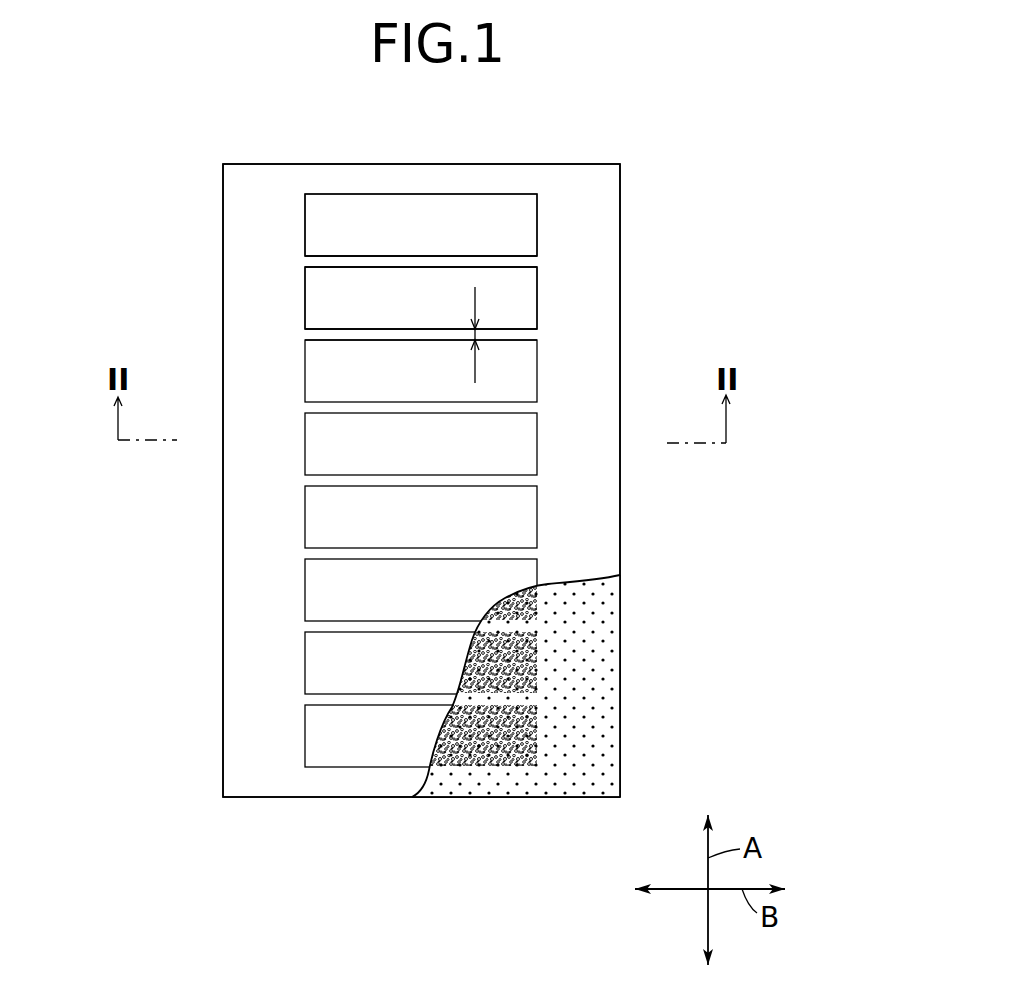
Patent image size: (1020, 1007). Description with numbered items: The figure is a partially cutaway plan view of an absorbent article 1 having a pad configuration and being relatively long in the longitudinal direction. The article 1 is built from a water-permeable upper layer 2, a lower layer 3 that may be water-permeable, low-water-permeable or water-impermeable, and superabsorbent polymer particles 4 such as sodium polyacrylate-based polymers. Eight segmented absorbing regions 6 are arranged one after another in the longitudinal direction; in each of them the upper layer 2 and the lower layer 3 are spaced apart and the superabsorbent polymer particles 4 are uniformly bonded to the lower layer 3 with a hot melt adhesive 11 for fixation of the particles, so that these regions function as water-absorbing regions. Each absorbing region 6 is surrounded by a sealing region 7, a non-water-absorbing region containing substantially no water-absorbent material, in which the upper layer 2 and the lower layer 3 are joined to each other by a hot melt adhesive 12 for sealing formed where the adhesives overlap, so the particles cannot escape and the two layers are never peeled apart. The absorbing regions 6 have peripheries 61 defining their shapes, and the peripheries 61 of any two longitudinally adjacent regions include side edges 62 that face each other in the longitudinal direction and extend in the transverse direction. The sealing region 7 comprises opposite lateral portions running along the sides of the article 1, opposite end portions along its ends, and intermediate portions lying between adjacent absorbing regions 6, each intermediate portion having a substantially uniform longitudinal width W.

The absorbent article 1 is at (679, 191).
The upper layer 2 is at (274, 778).
The lower layer 3 is at (587, 778).
The superabsorbent polymer particles 4 is at (498, 714).
The absorbing regions 6 is at (323, 217).
The sealing region 7 is at (373, 178).
The hot melt adhesive for fixation of the superabsorbent polymer particles 11 is at (533, 653).
The hot melt adhesive for sealing 12 is at (535, 777).
The peripheries 61 is at (537, 224).
The side edges 62 is at (346, 256).
The width W is at (477, 335).